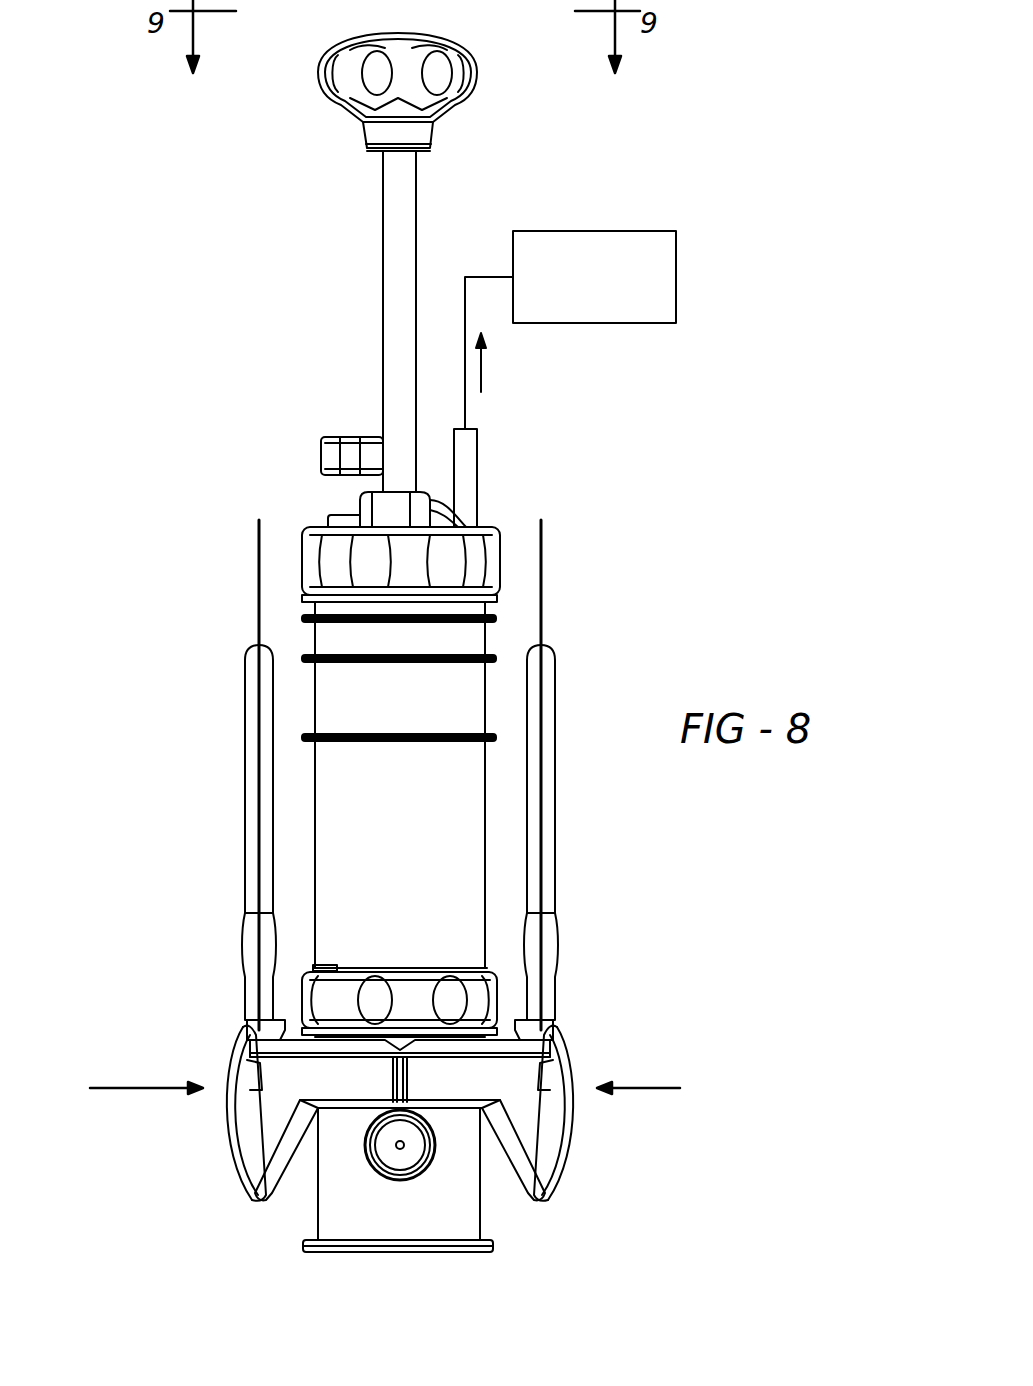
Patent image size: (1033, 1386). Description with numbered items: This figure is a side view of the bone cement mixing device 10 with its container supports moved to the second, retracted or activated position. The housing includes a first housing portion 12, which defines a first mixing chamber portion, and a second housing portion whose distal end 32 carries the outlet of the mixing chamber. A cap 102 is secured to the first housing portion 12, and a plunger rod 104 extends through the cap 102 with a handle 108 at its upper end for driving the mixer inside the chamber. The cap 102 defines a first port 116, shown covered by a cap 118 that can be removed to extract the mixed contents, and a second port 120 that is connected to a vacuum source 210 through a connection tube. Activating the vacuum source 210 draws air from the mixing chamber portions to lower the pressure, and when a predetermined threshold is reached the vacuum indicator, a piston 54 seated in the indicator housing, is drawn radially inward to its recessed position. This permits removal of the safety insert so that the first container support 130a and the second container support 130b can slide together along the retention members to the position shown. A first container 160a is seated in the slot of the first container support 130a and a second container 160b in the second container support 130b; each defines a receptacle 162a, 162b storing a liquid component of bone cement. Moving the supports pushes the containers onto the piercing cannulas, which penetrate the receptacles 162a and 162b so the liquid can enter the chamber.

The device 10 is at (206, 248).
The first housing portion 12 is at (447, 838).
The distal end 32 is at (462, 1250).
The piston 54 is at (380, 1152).
The cap 102 is at (470, 538).
The plunger rod 104 is at (397, 252).
The handle 108 is at (468, 73).
The first port 116 is at (345, 497).
The cap 118 is at (335, 445).
The second port 120 is at (470, 462).
The first container support 130a is at (532, 1128).
The second container support 130b is at (262, 1128).
The first container 160a is at (542, 582).
The second container 160b is at (258, 578).
The receptacle 162a is at (552, 705).
The receptacle 162b is at (250, 705).
The vacuum source 210 is at (676, 283).